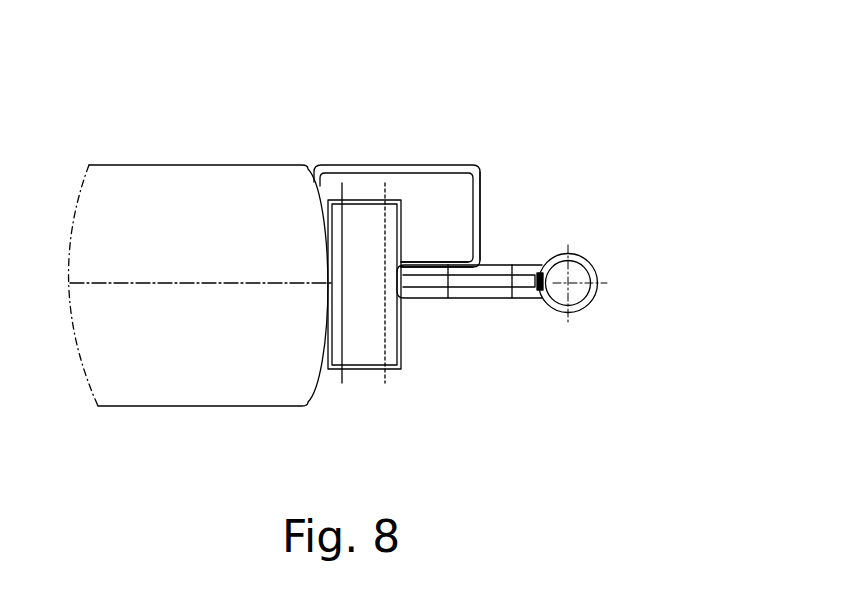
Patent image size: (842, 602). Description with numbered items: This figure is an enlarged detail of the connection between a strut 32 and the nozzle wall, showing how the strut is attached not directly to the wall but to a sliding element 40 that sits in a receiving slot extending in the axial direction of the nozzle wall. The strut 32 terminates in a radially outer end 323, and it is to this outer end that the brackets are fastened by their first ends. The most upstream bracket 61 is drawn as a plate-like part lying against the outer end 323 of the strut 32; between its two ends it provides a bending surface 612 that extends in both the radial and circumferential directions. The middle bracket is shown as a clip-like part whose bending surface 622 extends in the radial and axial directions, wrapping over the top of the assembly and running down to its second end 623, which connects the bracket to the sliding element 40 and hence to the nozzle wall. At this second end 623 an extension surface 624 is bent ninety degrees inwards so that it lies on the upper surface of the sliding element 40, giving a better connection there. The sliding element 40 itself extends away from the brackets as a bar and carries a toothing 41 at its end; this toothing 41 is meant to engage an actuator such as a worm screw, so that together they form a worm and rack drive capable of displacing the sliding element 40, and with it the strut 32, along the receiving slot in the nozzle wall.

The strut 32 is at (240, 388).
The radially outer end 323 is at (323, 380).
The bending surface 612 is at (365, 350).
The bracket 61 is at (402, 342).
The bending surface 622 is at (410, 165).
The second end 623 is at (482, 210).
The extension surface 624 is at (423, 262).
The sliding element 40 is at (512, 300).
The toothing 41 is at (598, 295).